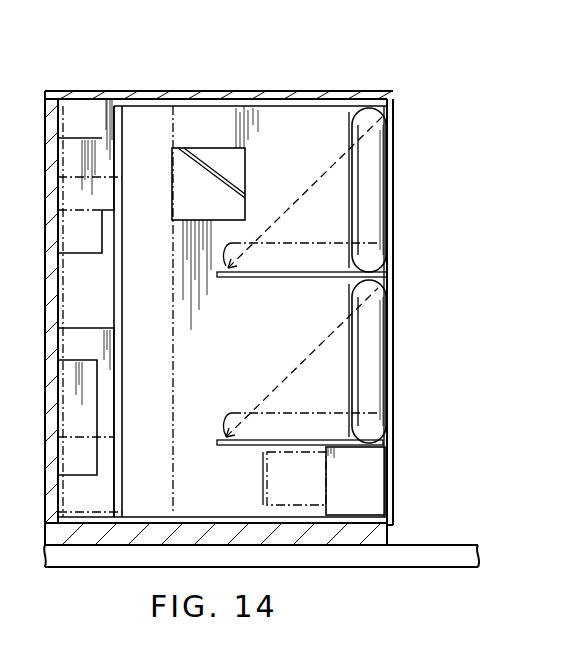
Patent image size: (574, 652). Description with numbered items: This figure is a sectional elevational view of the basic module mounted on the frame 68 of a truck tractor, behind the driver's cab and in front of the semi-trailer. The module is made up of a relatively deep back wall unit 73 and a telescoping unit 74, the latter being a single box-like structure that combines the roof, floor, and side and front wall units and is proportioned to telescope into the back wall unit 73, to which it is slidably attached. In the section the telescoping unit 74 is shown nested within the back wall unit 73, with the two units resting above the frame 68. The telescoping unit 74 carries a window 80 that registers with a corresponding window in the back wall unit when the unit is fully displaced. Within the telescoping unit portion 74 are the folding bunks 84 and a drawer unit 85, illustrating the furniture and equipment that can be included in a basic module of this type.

The frame 68 is at (428, 568).
The back wall unit 73 is at (305, 117).
The telescoping unit 74 is at (396, 142).
The window 80 is at (226, 148).
The folding bunks 84 is at (268, 280).
The drawer unit 85 is at (362, 478).